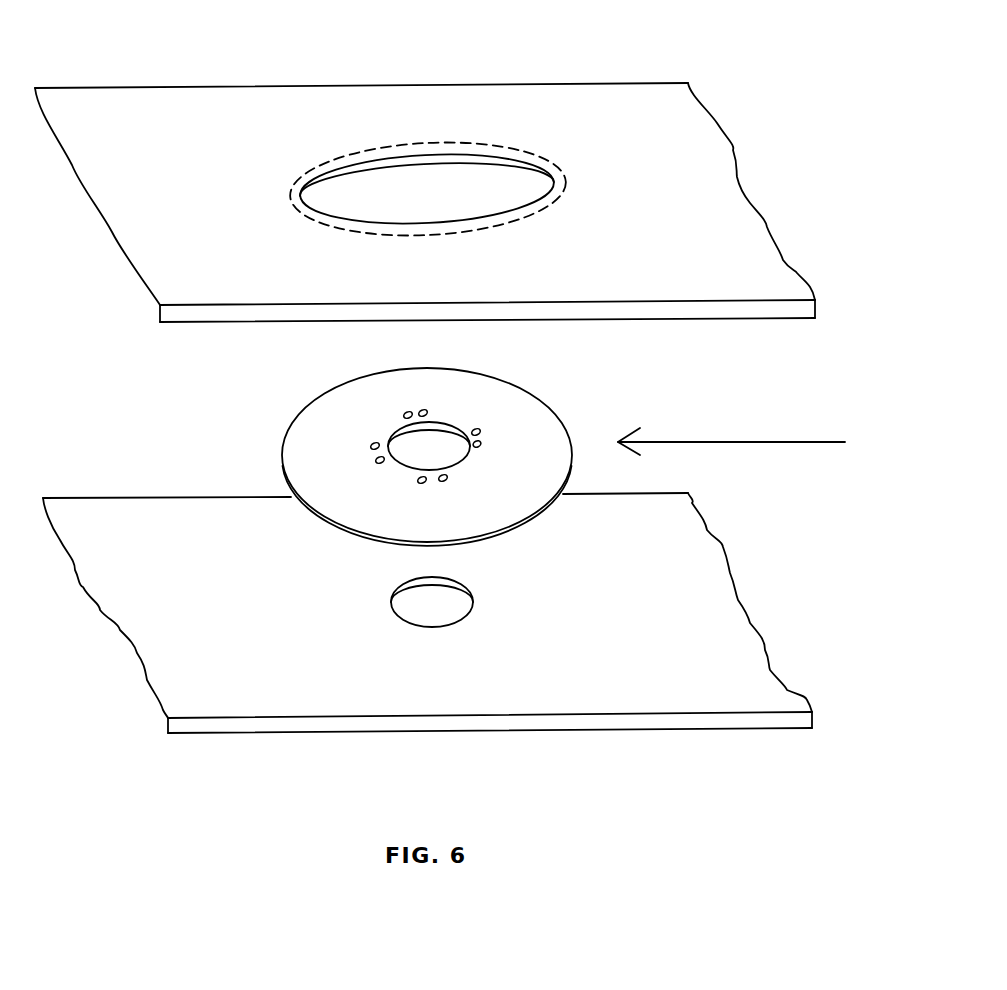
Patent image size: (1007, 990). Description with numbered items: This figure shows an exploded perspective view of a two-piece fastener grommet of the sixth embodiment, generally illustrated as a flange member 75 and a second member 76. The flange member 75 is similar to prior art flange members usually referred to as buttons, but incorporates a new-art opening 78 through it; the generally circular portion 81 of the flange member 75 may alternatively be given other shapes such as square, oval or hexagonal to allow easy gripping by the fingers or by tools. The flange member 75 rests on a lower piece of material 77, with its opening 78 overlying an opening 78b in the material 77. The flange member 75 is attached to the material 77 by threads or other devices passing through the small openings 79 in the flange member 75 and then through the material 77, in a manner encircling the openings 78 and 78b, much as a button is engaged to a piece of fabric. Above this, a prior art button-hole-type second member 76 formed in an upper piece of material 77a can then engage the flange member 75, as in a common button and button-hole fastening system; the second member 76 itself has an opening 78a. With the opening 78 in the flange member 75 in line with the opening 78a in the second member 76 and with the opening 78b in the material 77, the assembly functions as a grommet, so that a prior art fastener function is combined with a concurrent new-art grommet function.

The flange member 75 is at (877, 452).
The second member 76 is at (507, 162).
The material 77 is at (652, 671).
The material 77a is at (655, 158).
The opening 78 is at (438, 452).
The opening 78a is at (388, 183).
The opening 78b is at (435, 612).
The openings 79 is at (447, 480).
The portion 81 is at (327, 428).